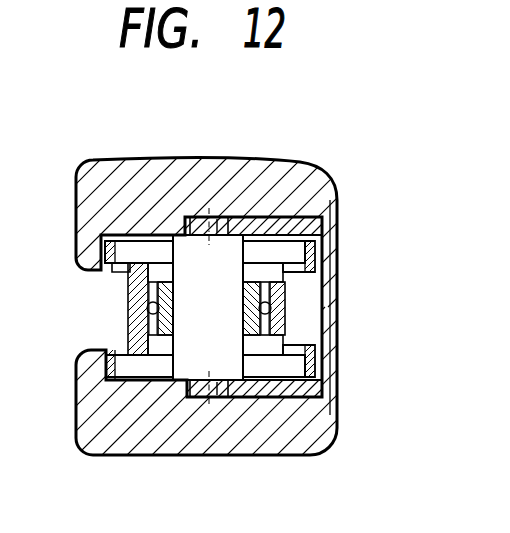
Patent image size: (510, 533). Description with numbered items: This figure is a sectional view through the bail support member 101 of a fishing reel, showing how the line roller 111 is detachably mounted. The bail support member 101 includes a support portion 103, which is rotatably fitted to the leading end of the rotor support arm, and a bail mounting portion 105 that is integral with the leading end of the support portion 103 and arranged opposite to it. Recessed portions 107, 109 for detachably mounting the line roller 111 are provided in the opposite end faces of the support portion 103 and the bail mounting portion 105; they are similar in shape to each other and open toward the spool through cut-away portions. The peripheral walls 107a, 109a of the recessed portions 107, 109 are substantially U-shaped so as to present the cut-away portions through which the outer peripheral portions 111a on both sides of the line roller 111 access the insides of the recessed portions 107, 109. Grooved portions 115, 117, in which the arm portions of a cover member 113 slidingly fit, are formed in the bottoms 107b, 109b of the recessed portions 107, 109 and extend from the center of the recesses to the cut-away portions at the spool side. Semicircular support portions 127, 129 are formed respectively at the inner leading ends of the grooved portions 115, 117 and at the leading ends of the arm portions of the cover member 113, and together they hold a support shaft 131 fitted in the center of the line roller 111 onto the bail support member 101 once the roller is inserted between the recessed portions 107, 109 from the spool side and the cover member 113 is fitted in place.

The bail support member 101 is at (90, 154).
The support portion 103 is at (113, 443).
The bail mounting portion 105 is at (276, 162).
The recessed portion 107 is at (340, 342).
The peripheral wall 107a is at (330, 372).
The bottom 107b is at (153, 377).
The recessed portion 109 is at (318, 219).
The peripheral wall 109a is at (338, 233).
The bottom 109b is at (152, 248).
The line roller 111 is at (115, 285).
The outer peripheral portion 111a is at (338, 262).
The cover member 113 is at (350, 278).
The grooved portion 115 is at (262, 398).
The grooved portion 117 is at (243, 222).
The semicircular support portion 127 is at (197, 232).
The semicircular support portion 129 is at (222, 236).
The support shaft 131 is at (203, 400).